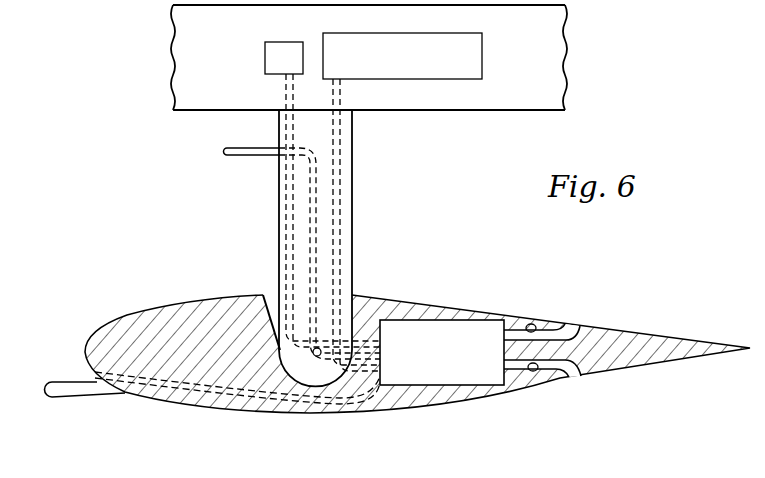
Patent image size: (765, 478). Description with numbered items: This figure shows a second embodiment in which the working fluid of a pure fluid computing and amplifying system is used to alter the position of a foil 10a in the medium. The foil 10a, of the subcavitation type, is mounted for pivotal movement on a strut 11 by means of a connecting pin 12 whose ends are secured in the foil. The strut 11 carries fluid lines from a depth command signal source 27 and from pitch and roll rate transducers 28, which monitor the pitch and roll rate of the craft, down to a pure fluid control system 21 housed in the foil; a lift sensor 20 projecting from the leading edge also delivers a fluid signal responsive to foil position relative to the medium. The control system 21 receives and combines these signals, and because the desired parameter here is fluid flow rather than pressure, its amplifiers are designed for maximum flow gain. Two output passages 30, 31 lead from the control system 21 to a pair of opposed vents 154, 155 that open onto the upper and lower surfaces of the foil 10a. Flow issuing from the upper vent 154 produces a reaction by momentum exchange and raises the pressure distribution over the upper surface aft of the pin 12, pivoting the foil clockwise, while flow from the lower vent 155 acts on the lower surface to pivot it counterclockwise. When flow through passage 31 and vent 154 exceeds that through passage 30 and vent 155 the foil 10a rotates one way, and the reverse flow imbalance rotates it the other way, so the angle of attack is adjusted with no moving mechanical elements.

The foil 10a is at (481, 287).
The strut 11 is at (352, 193).
The pivot pin 12 is at (314, 356).
The lift sensor 20 is at (76, 399).
The pure fluid control system 21 is at (443, 359).
The depth command signal source 27 is at (265, 60).
The pitch and roll rate transducer 28 is at (482, 45).
The output passage 30 is at (533, 372).
The output passage 31 is at (534, 324).
The vent 154 is at (580, 323).
The vent 155 is at (580, 378).